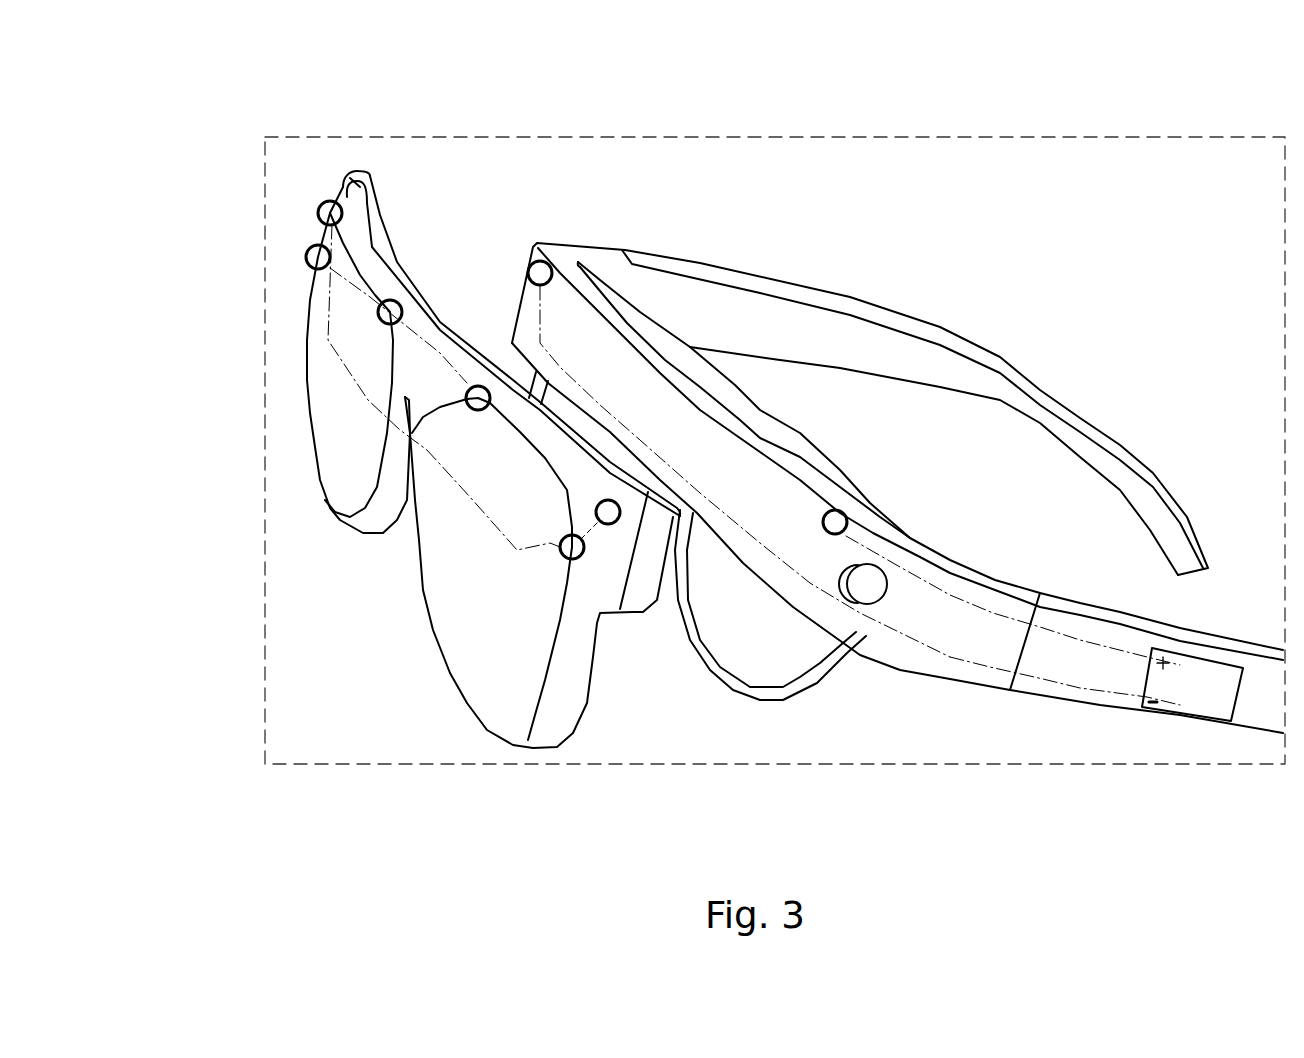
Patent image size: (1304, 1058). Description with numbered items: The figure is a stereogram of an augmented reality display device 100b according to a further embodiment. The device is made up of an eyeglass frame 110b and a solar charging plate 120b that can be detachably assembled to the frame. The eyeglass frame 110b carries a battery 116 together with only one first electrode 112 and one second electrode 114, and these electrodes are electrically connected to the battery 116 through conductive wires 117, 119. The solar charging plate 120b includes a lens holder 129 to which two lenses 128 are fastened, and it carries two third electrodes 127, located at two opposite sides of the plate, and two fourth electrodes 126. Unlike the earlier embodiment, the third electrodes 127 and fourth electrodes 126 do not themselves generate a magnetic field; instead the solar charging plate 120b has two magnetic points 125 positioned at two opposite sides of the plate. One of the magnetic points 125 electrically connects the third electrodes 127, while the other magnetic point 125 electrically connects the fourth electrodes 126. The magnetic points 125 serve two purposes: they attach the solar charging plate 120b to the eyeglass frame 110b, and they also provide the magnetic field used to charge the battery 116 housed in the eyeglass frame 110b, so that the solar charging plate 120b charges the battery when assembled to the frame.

The augmented reality display device 100b is at (213, 45).
The eyeglass frame 110b is at (655, 252).
The solar charging plate 120b is at (357, 170).
The first electrode 112 is at (827, 535).
The second electrode 114 is at (530, 266).
The battery 116 is at (1200, 698).
The conductive wire 117 is at (1123, 652).
The conductive wire 119 is at (1043, 679).
The magnetic point 125 is at (318, 204).
The fourth electrode 126 is at (390, 300).
The third electrode 127 is at (307, 258).
The lens 128 is at (310, 312).
The lens holder 129 is at (533, 743).